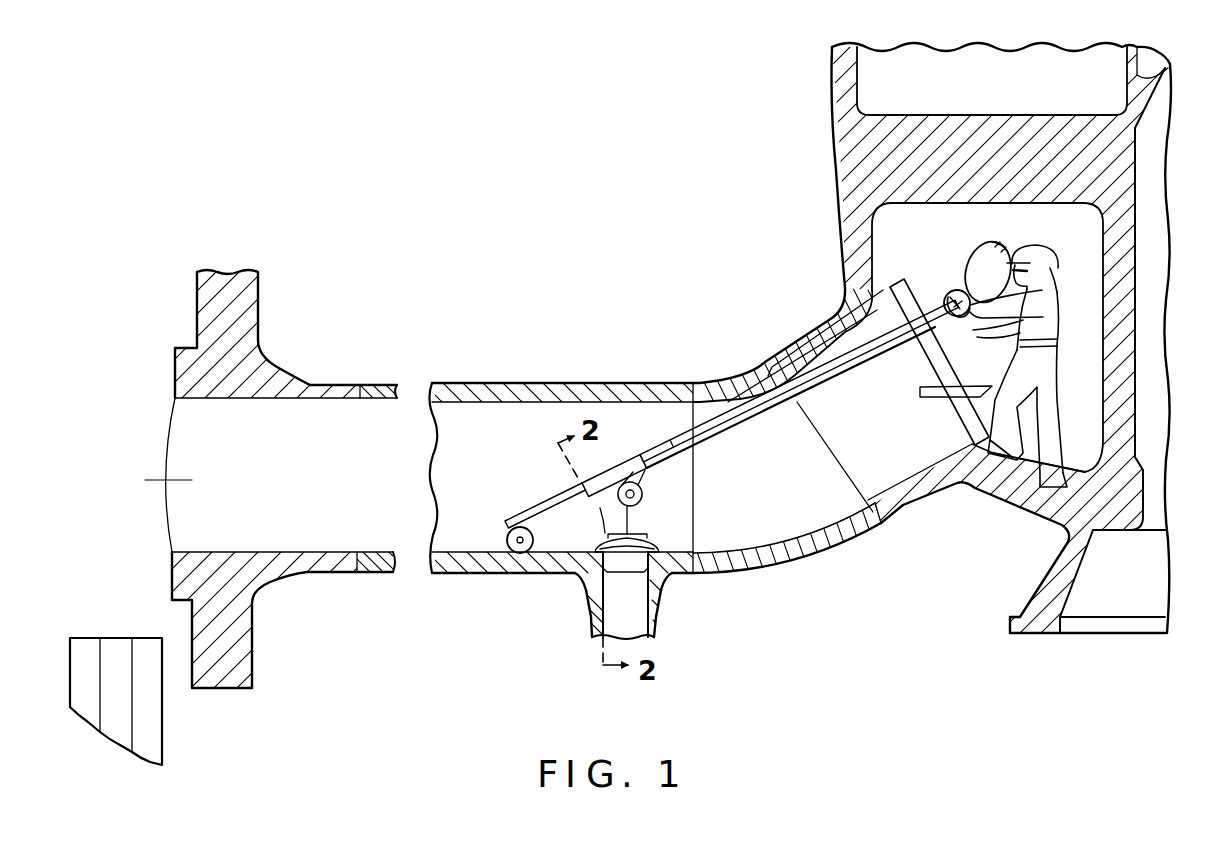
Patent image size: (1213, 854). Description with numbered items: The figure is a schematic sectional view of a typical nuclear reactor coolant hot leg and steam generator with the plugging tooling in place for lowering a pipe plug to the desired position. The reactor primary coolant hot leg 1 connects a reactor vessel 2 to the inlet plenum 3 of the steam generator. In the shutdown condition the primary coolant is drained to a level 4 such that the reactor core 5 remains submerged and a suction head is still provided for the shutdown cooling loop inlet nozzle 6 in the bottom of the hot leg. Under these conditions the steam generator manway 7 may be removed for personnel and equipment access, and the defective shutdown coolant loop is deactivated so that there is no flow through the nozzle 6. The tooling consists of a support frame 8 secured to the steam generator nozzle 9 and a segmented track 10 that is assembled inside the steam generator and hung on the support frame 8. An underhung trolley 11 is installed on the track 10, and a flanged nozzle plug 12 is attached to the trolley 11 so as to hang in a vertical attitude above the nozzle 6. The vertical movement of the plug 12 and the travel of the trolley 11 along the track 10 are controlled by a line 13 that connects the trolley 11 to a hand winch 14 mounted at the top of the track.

The reactor primary coolant hot leg 1 is at (560, 383).
The reactor vessel 2 is at (257, 292).
The inlet plenum 3 is at (836, 228).
The level 4 is at (152, 474).
The reactor core 5 is at (123, 638).
The shutdown cooling loop inlet nozzle 6 is at (636, 619).
The steam generator manway 7 is at (979, 241).
The support frame 8 is at (924, 270).
The steam generator nozzle 9 is at (907, 505).
The segmented track 10 is at (536, 499).
The underhung trolley 11 is at (612, 459).
The flanged nozzle plug 12 is at (656, 548).
The line 13 is at (736, 434).
The hand winch 14 is at (954, 325).